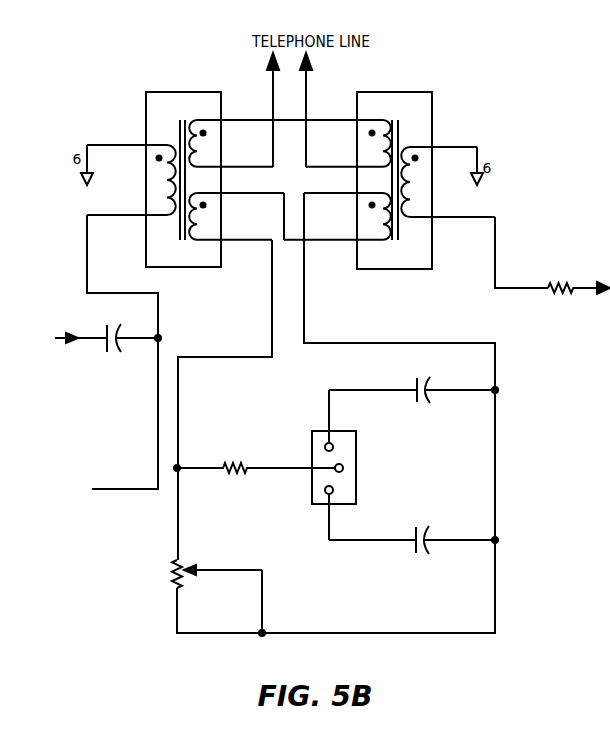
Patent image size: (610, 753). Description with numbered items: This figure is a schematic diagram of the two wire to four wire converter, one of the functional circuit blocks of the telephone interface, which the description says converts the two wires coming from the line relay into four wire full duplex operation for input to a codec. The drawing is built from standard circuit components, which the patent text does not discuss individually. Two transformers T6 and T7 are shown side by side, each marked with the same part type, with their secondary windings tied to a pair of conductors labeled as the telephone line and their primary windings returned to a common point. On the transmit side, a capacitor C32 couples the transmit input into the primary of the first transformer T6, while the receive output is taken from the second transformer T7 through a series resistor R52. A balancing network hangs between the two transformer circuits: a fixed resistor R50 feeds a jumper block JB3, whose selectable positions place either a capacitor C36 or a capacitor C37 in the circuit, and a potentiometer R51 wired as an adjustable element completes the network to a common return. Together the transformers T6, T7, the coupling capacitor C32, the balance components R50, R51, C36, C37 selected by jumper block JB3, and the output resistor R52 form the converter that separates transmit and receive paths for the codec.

The transformer T6 (A19N) T6 is at (185, 181).
The transformer T7 (A19N) T7 is at (384, 181).
The capacitor C32 2.30uF C32 is at (97, 340).
The capacitor C36 0.15uF C36 is at (414, 391).
The capacitor C37 .047uF C37 is at (414, 542).
The resistor R50 is at (256, 458).
The potentiometer R51 2K R51 is at (219, 584).
The resistor R52 1K R52 is at (578, 279).
The jumper block JB3 is at (347, 465).